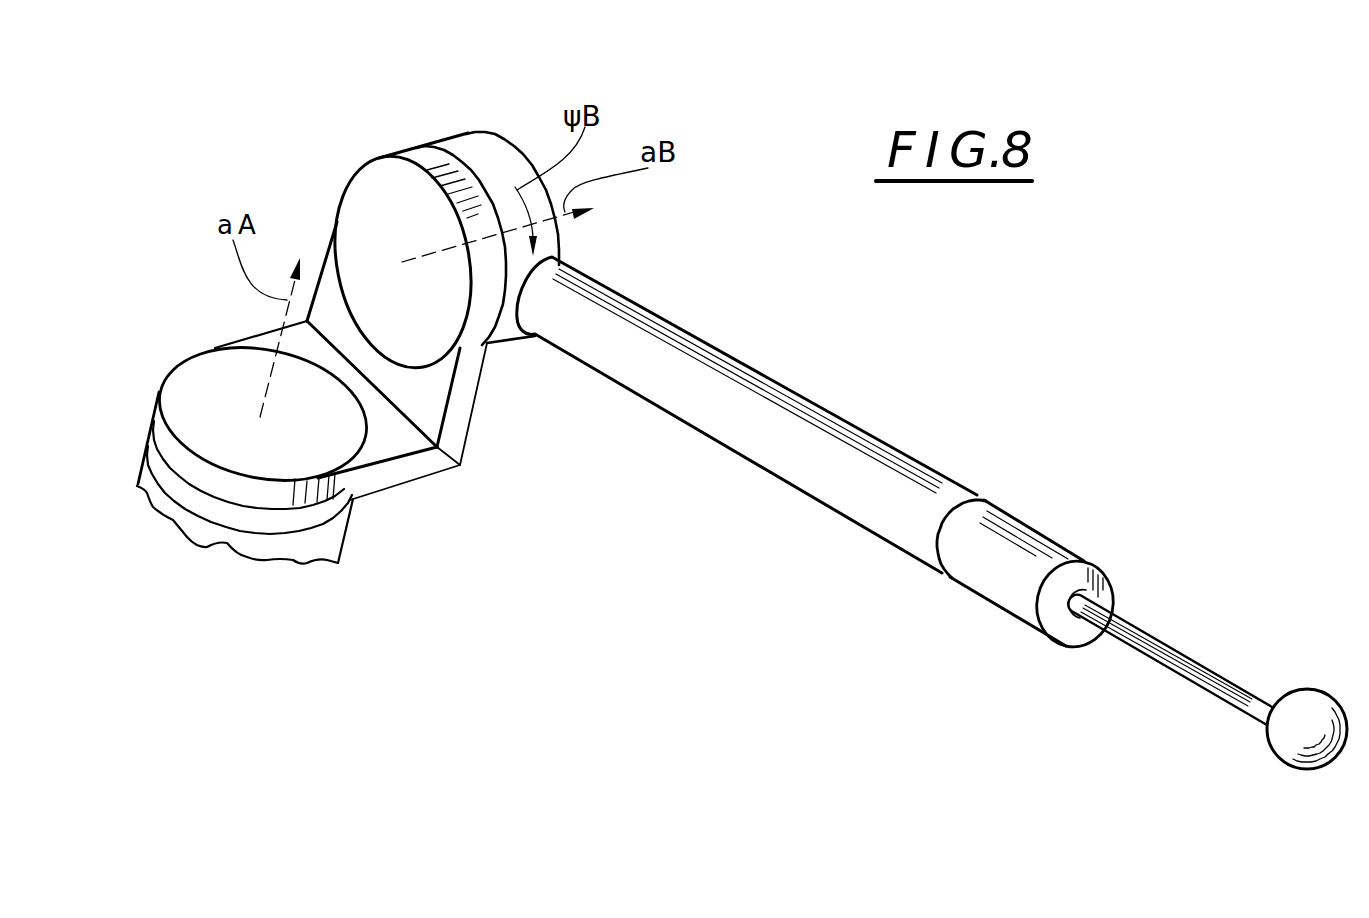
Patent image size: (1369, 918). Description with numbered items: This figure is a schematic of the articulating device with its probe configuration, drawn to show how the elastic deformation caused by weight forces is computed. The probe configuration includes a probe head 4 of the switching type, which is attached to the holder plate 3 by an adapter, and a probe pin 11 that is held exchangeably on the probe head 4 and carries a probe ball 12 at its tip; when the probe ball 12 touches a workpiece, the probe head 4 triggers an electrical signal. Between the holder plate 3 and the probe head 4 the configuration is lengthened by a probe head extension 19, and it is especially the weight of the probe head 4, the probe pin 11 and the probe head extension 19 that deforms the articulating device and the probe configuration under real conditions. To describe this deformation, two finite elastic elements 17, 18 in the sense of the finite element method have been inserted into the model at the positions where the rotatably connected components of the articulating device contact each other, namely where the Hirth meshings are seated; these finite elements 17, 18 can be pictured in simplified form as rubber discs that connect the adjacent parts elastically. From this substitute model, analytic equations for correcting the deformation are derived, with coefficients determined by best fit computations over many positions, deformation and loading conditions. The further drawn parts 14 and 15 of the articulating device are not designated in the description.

The holder plate 3 is at (490, 143).
The probe head 4 is at (1027, 533).
The probe pin 11 is at (1165, 650).
The probe ball 12 is at (1300, 703).
The holder bracket 14 is at (517, 393).
The base disc 15 is at (133, 430).
The finite element 17 is at (437, 148).
The finite element 18 is at (335, 499).
The probe head extension 19 is at (748, 402).